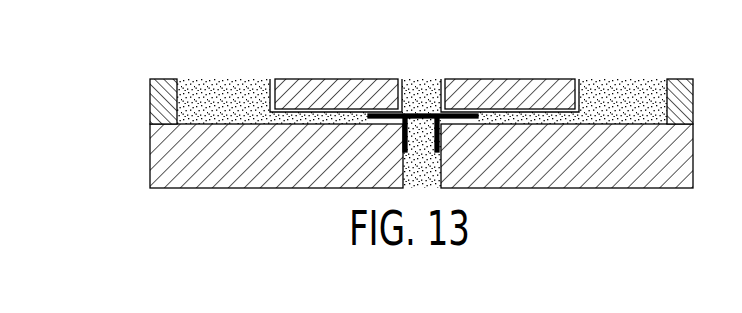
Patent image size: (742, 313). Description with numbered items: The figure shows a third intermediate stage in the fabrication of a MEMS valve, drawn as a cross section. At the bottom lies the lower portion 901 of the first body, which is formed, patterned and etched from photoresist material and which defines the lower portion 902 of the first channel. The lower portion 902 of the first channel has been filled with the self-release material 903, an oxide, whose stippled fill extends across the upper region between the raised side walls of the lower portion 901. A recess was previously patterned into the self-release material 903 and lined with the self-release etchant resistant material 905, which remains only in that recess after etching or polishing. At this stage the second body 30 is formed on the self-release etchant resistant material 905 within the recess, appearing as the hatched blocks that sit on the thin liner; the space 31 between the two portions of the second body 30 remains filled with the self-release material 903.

The lower portion of the first body 901 is at (161, 165).
The lower portion of the first channel 902 is at (227, 123).
The self-release material 903 is at (633, 98).
The second body 30 is at (335, 93).
The gap between blocks 31 is at (425, 88).
The self-release etchant resistant material 905 is at (577, 82).